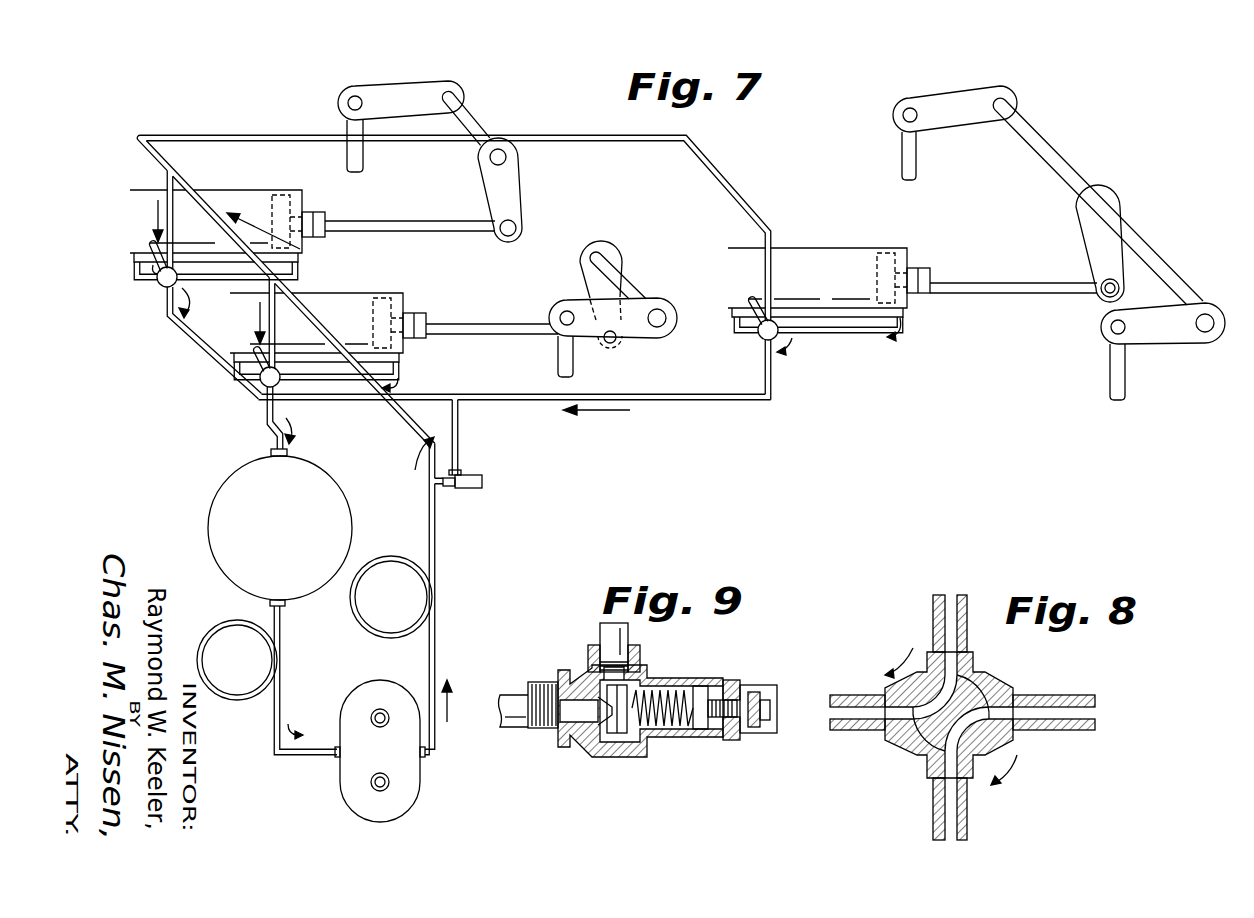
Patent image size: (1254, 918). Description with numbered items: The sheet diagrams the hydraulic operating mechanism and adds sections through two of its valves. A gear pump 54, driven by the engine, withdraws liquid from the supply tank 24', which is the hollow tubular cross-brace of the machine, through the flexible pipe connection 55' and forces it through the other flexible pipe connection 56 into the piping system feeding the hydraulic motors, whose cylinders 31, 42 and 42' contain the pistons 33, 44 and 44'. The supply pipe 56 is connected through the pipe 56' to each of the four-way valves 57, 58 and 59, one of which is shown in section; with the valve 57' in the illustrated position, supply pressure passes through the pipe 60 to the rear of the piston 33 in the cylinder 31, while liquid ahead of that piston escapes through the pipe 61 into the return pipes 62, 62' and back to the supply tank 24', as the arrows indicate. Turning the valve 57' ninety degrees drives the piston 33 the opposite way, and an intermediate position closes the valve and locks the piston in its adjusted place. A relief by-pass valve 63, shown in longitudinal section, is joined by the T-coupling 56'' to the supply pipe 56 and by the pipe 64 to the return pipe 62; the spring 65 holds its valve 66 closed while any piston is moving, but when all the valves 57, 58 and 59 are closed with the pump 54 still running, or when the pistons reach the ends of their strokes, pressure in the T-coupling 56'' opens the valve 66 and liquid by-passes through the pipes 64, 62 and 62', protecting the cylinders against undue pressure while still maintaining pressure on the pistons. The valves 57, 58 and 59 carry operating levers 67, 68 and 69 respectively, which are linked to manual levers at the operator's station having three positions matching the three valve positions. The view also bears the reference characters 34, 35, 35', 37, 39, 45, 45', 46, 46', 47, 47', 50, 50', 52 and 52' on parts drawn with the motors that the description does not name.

In FIG. 7, the supply tank 24' is at (253, 602).
In FIG. 7, the cylinder 31 is at (822, 254).
In FIG. 7, the piston 33 is at (887, 252).
In FIG. 7, the piston rod 34 is at (990, 282).
In FIG. 7, the connecting rod 35 is at (1098, 201).
In FIG. 7, the lever 35' is at (1078, 243).
In FIG. 7, the crank arm 37 is at (962, 101).
In FIG. 7, the shaft 39 is at (912, 165).
In FIG. 7, the cylinder 42 is at (227, 205).
In FIG. 7, the cylinder 42' is at (328, 306).
In FIG. 7, the piston 44 is at (293, 195).
In FIG. 7, the piston 44' is at (407, 300).
In FIG. 7, the piston rod 45 is at (410, 203).
In FIG. 7, the piston rod 45' is at (492, 303).
In FIG. 7, the lever 46 is at (523, 190).
In FIG. 7, the lever 46' is at (576, 294).
In FIG. 7, the link 47 is at (483, 118).
In FIG. 7, the link 47' is at (636, 272).
In FIG. 7, the crank arm 50 is at (401, 87).
In FIG. 7, the crank arm 50' is at (613, 332).
In FIG. 7, the shaft 52 is at (376, 146).
In FIG. 7, the shaft 52' is at (539, 356).
In FIG. 7, the gear pump 54 is at (356, 751).
In FIG. 7, the flexible pipe connection 55' is at (265, 660).
In FIG. 7, the supply pipe 56 is at (434, 596).
In FIG. 7, the pipe 56' is at (456, 265).
In FIG. 8, the pipe 56' is at (964, 598).
In FIG. 9, the T-coupling 56'' is at (499, 686).
In FIG. 7, the four-way valve 57 is at (754, 350).
In FIG. 8, the four-way valve 57 is at (932, 725).
In FIG. 8, the valve 57' is at (978, 702).
In FIG. 7, the four-way valve 58 is at (150, 293).
In FIG. 7, the four-way valve 59 is at (248, 388).
In FIG. 7, the pipe 60 is at (740, 337).
In FIG. 8, the pipe 60 is at (857, 695).
In FIG. 7, the pipe 61 is at (860, 333).
In FIG. 8, the pipe 61 is at (1078, 697).
In FIG. 7, the return pipe 62 is at (515, 416).
In FIG. 8, the return pipe 62 is at (981, 809).
In FIG. 7, the return pipe 62' is at (252, 418).
In FIG. 7, the relief by-pass valve 63 is at (470, 495).
In FIG. 9, the relief by-pass valve 63 is at (672, 753).
In FIG. 7, the pipe 64 is at (457, 432).
In FIG. 9, the pipe 64 is at (608, 638).
In FIG. 9, the spring 65 is at (693, 688).
In FIG. 9, the valve 66 is at (613, 723).
In FIG. 7, the operating lever 67 is at (750, 297).
In FIG. 7, the operating lever 68 is at (152, 242).
In FIG. 7, the operating lever 69 is at (258, 360).